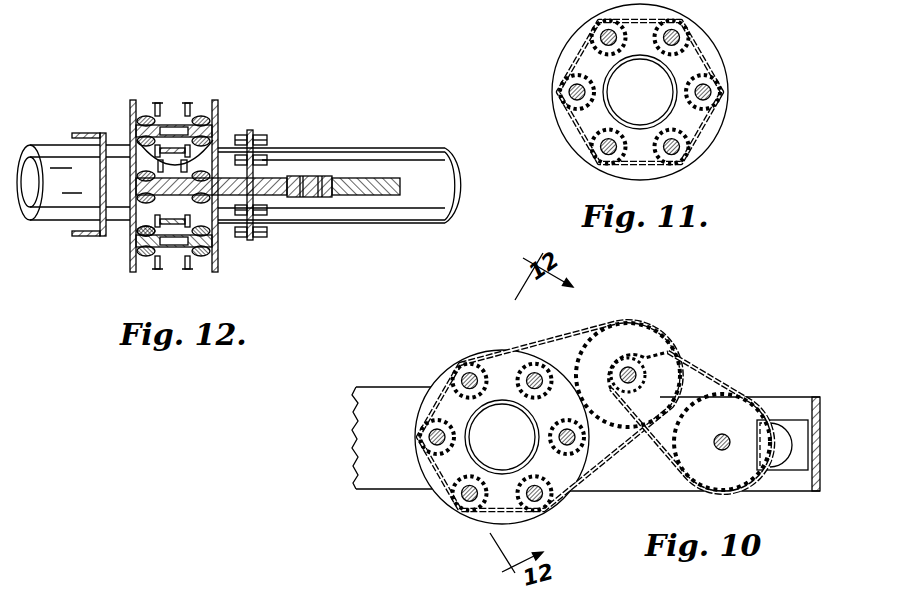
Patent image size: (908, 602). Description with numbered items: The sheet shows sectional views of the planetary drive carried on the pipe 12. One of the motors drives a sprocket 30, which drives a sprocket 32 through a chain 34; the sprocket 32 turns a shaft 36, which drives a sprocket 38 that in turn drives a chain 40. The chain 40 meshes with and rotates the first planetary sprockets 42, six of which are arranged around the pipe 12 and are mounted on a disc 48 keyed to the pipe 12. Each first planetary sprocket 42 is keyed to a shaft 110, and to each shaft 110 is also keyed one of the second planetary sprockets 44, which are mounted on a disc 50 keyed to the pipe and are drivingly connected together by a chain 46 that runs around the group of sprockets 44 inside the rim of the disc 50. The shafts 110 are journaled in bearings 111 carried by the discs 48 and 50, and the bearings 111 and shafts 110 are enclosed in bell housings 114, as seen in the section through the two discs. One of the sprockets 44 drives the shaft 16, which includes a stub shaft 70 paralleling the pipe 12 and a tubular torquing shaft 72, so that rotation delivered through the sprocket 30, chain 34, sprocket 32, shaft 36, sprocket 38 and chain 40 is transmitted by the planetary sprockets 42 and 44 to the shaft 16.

In FIG. 12, the pipe 12 is at (397, 226).
In FIG. 11, the pipe 12 is at (607, 103).
In FIG. 10, the pipe 12 is at (503, 477).
In FIG. 12, the shaft 16 is at (360, 190).
In FIG. 10, the sprocket 30 is at (723, 407).
In FIG. 10, the sprocket 32 is at (683, 353).
In FIG. 10, the chain 34 is at (703, 380).
In FIG. 10, the shaft 36 is at (628, 372).
In FIG. 10, the sprocket 38 is at (622, 341).
In FIG. 10, the chain 40 is at (540, 343).
In FIG. 12, the first planetary sprockets 42 is at (134, 165).
In FIG. 10, the first planetary sprockets 42 is at (440, 460).
In FIG. 12, the second planetary sprockets 44 is at (215, 140).
In FIG. 11, the second planetary sprockets 44 is at (692, 54).
In FIG. 11, the chain 46 is at (703, 128).
In FIG. 12, the disc 48 is at (130, 268).
In FIG. 10, the disc 48 is at (487, 353).
In FIG. 12, the disc 50 is at (214, 258).
In FIG. 11, the disc 50 is at (578, 36).
In FIG. 12, the stub shaft 70 is at (272, 187).
In FIG. 12, the tubular torquing shaft 72 is at (340, 178).
In FIG. 12, the shaft 110 is at (133, 193).
In FIG. 10, the shaft 110 is at (433, 425).
In FIG. 12, the bearings 111 is at (197, 113).
In FIG. 12, the bell housings 114 is at (197, 263).